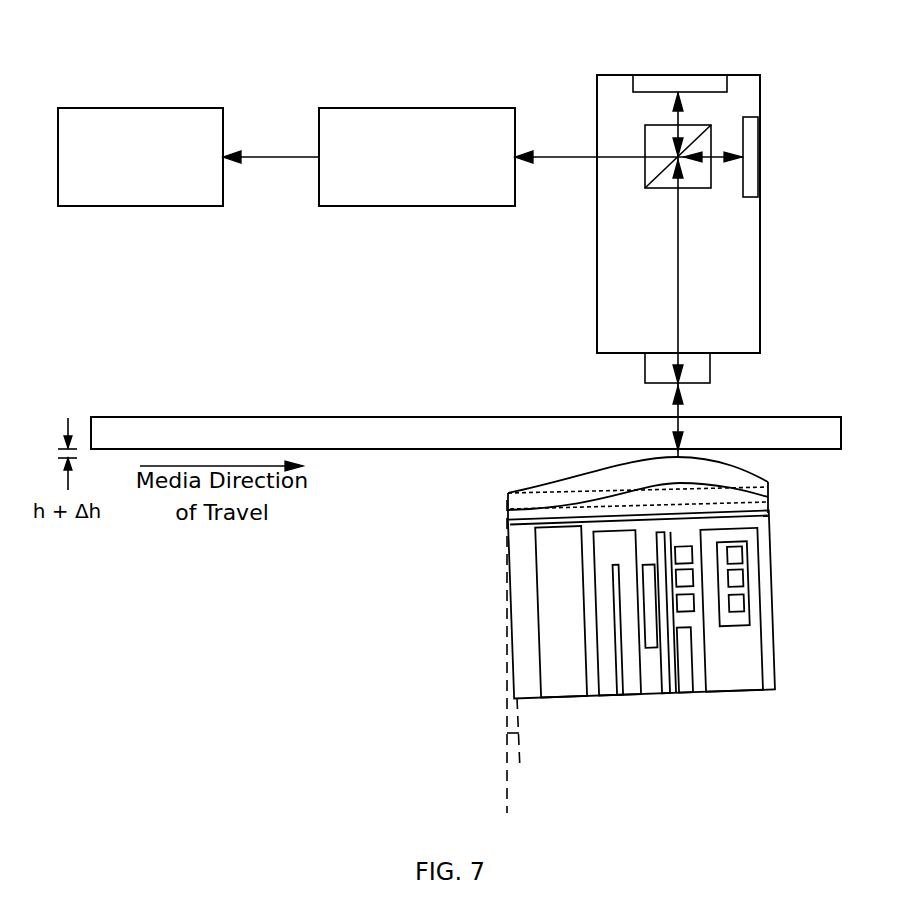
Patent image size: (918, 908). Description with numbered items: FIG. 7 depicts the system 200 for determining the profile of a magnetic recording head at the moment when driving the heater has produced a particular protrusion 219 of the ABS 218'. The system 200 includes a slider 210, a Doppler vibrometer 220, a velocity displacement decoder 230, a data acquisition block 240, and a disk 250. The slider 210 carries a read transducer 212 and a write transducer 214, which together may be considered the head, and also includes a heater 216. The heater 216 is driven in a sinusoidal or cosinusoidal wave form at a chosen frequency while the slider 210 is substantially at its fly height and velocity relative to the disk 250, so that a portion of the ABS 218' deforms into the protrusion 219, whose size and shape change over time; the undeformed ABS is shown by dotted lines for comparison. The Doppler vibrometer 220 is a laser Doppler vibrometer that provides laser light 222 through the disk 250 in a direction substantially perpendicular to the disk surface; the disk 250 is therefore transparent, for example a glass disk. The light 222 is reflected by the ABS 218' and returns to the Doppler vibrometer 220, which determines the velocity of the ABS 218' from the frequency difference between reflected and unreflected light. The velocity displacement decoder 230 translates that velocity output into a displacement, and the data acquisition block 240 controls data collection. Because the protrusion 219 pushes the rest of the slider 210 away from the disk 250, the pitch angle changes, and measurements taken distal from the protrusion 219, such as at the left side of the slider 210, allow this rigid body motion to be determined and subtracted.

The system 200 is at (470, 37).
The slider 210 is at (685, 579).
The read transducer 212 is at (548, 700).
The write transducer 214 is at (688, 671).
The heater 216 is at (657, 700).
The ABS 218' is at (686, 509).
The protrusion 219 is at (613, 461).
The Doppler vibrometer 220 is at (761, 238).
The light 222 is at (668, 303).
The velocity displacement decoder 230 is at (516, 140).
The data acquisition block 240 is at (224, 140).
The disk 250 is at (157, 417).